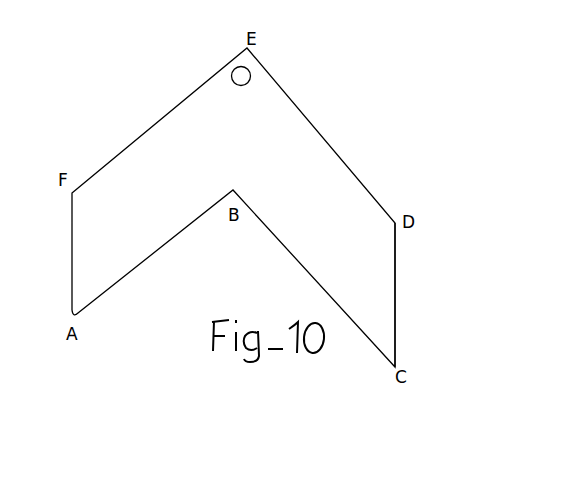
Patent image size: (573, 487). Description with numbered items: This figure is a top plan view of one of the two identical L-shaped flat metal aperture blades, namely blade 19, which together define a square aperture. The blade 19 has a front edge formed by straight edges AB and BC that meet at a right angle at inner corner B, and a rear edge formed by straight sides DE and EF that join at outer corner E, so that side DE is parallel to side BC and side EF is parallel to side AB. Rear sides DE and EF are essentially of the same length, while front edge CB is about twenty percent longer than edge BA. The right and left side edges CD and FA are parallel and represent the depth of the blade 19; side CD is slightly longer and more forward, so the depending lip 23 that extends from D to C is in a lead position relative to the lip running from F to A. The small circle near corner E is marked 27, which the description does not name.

The L-blade 19 is at (137, 271).
The depending lip 23 is at (397, 289).
The aperture 27 is at (250, 70).